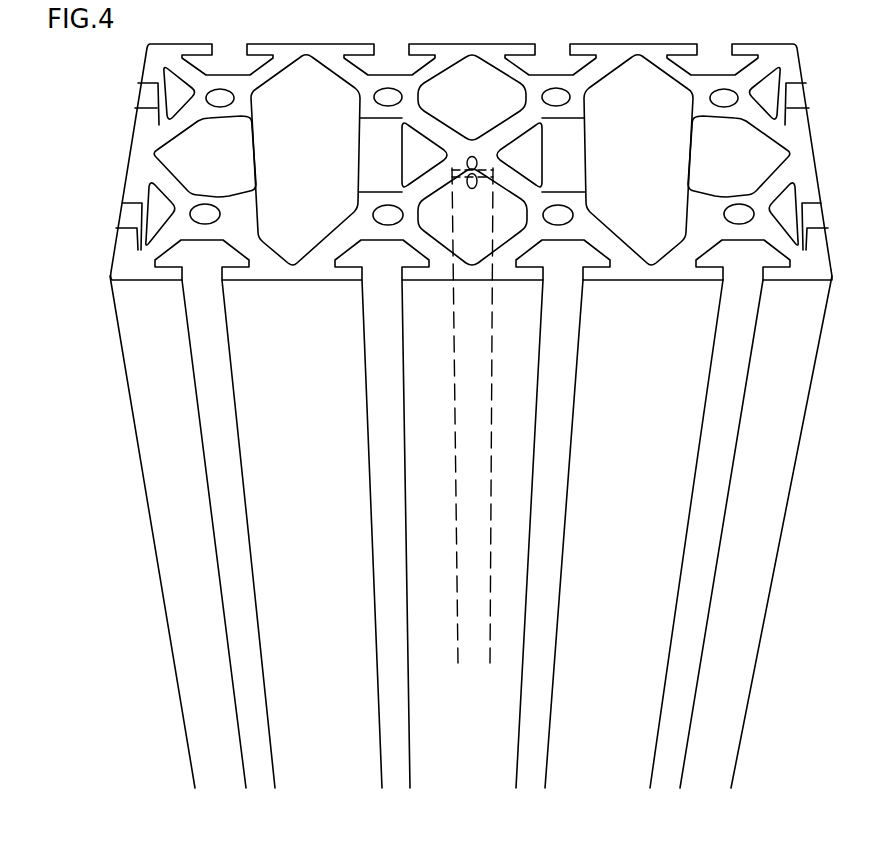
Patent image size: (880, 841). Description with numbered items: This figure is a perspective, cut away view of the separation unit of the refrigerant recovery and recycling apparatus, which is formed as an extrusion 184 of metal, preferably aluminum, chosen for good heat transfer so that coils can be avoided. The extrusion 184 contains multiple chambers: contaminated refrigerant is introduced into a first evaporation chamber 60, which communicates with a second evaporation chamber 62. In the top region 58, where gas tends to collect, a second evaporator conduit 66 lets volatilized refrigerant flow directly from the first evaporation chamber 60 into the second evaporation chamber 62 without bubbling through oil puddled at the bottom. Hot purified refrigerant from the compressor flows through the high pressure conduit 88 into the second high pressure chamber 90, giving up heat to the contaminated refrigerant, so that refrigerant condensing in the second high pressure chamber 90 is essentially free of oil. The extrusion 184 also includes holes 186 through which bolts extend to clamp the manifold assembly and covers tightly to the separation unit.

The top region 58 is at (113, 370).
The first evaporation chamber 60 is at (293, 168).
The second evaporation chamber 62 is at (643, 165).
The second evaporator conduit 66 is at (494, 171).
The high pressure conduit 88 is at (472, 188).
The second high pressure chamber 90 is at (510, 222).
The extrusion 184 is at (170, 472).
The holes 186 is at (375, 96).